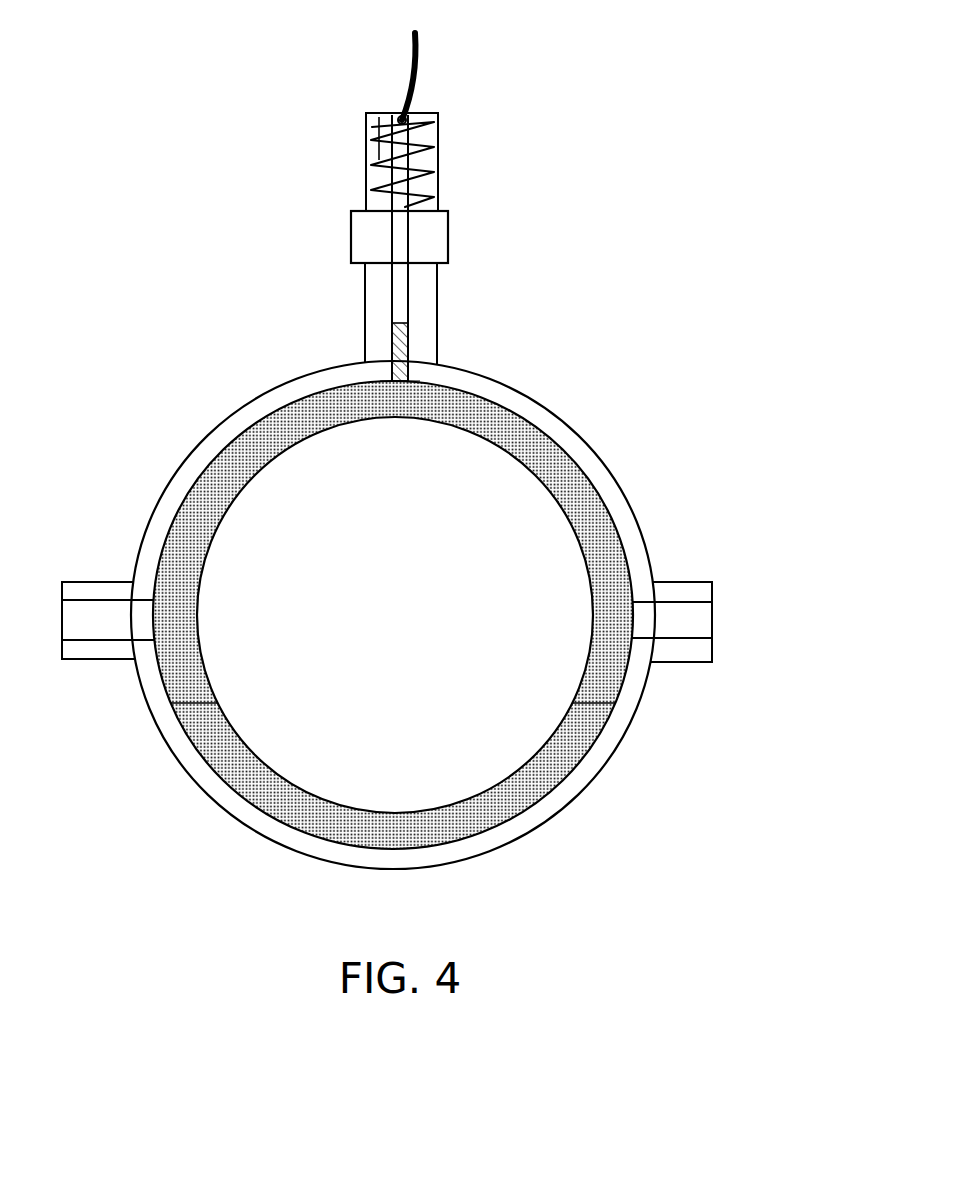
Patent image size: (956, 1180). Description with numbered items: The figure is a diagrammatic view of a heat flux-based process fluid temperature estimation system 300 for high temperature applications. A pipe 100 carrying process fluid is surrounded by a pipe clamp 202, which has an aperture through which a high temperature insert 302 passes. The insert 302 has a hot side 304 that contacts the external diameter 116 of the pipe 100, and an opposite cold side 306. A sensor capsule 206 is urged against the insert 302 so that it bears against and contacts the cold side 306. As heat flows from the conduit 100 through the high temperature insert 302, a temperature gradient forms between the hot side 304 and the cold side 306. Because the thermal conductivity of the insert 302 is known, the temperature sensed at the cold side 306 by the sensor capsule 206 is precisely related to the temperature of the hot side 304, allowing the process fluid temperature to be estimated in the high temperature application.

The pipe 100 is at (528, 780).
The external diameter 116 is at (620, 530).
The pipe clamp 202 is at (613, 470).
The sensor capsule 206 is at (397, 302).
The system 300 is at (697, 182).
The high temperature insert 302 is at (408, 360).
The hot side 304 is at (387, 377).
The cold side 306 is at (393, 323).